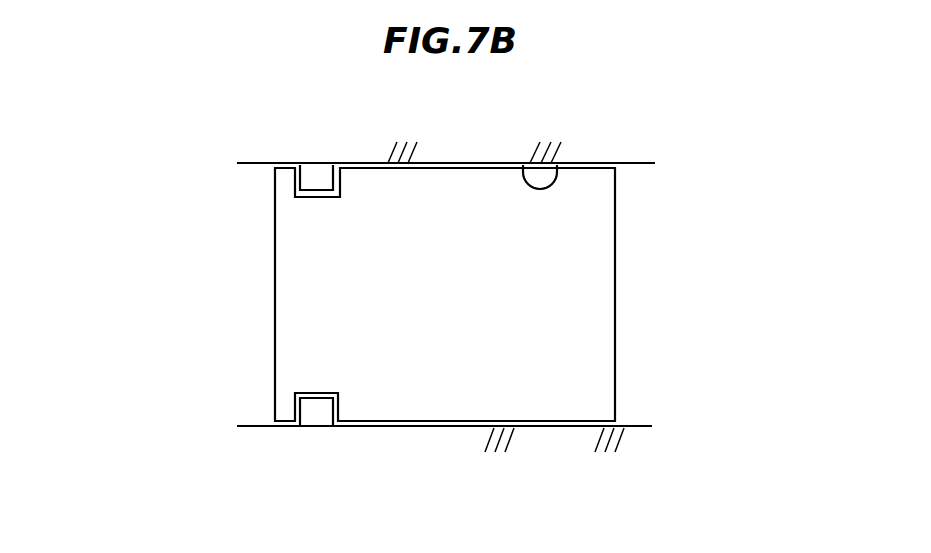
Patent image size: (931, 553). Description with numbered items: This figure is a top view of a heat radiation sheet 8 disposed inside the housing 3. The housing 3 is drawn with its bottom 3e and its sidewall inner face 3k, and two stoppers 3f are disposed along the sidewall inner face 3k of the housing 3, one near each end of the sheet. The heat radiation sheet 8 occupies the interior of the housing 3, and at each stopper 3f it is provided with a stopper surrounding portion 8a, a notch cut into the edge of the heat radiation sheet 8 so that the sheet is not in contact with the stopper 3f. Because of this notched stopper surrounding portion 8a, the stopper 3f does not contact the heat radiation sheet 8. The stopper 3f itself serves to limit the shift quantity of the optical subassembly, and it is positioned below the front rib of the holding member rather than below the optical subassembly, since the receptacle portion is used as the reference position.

The housing 3 is at (452, 118).
The bottom 3e is at (632, 173).
The stopper 3f is at (318, 172).
The sidewall inner face 3k is at (693, 445).
The heat radiation sheet 8 is at (420, 400).
The stopper surrounding portion 8a is at (302, 198).